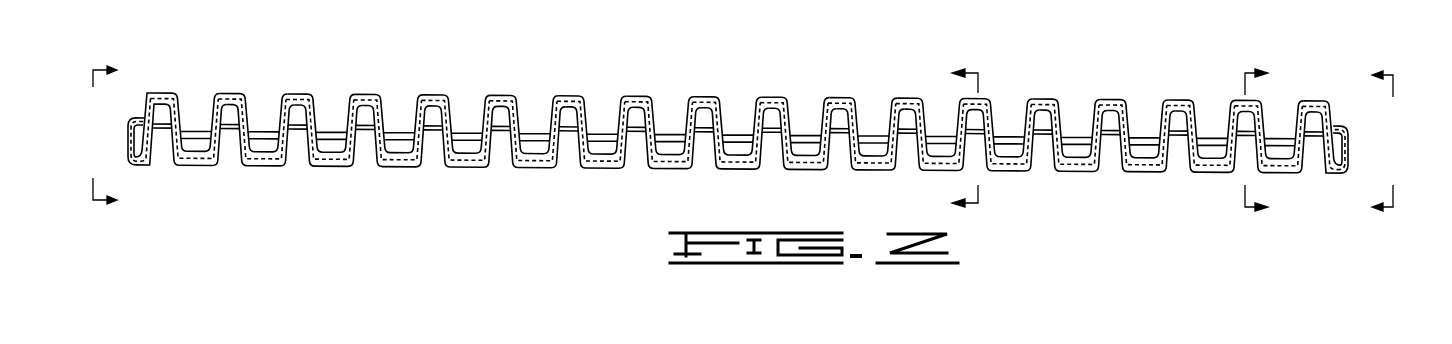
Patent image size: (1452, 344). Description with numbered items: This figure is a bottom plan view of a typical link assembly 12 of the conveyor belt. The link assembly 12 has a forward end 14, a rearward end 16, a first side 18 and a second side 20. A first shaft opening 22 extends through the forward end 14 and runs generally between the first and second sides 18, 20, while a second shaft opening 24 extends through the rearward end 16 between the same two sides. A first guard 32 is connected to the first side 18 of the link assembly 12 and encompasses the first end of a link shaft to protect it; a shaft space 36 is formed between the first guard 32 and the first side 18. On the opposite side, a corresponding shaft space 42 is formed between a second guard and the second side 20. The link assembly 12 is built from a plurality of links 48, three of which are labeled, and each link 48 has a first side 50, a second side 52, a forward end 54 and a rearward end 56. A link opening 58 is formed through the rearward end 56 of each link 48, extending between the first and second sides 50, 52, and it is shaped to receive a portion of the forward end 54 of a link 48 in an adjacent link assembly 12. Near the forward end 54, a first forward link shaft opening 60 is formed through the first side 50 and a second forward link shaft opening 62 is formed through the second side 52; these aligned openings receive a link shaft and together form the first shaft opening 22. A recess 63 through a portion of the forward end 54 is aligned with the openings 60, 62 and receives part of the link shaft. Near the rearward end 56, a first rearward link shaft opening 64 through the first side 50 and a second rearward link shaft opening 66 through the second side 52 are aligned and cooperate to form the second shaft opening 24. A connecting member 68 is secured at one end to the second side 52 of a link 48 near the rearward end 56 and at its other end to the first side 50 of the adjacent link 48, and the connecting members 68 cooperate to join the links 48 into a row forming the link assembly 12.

The link assembly 12 is at (1325, 100).
The forward end 14 is at (372, 94).
The rearward end 16 is at (398, 166).
The first side 18 is at (128, 125).
The second side 20 is at (1353, 130).
The first shaft opening 22 is at (503, 97).
The second shaft opening 24 is at (468, 168).
The first guard 32 is at (128, 147).
The shaft space 36 is at (140, 146).
The shaft space 42 is at (1343, 148).
The link 48 is at (645, 96).
The first side 50 is at (556, 115).
The second side 52 is at (590, 117).
The forward end 54 is at (563, 98).
The rearward end 56 is at (593, 148).
The link opening 58 is at (708, 158).
The first forward link shaft opening 60 is at (728, 112).
The second forward link shaft opening 62 is at (1060, 117).
The recess 63 is at (1178, 102).
The first rearward link shaft opening 64 is at (838, 148).
The second rearward link shaft opening 66 is at (896, 150).
The connecting member 68 is at (1011, 168).